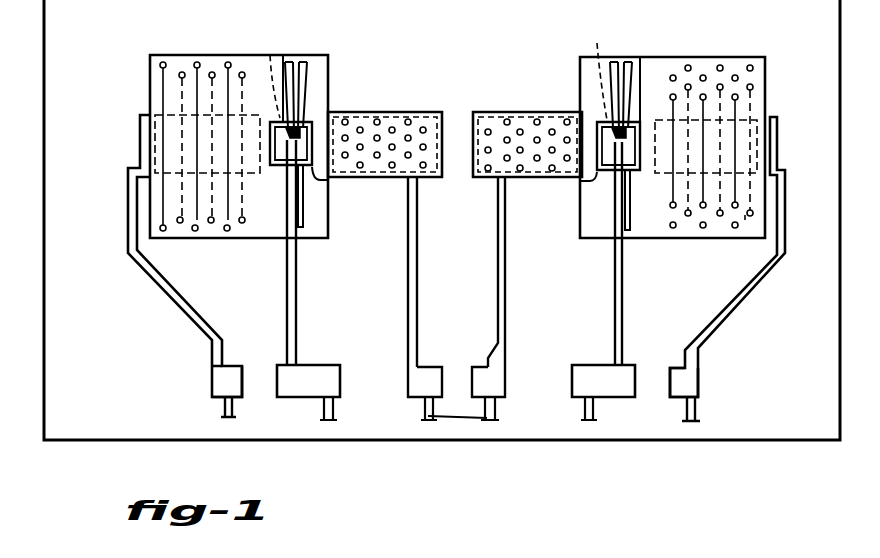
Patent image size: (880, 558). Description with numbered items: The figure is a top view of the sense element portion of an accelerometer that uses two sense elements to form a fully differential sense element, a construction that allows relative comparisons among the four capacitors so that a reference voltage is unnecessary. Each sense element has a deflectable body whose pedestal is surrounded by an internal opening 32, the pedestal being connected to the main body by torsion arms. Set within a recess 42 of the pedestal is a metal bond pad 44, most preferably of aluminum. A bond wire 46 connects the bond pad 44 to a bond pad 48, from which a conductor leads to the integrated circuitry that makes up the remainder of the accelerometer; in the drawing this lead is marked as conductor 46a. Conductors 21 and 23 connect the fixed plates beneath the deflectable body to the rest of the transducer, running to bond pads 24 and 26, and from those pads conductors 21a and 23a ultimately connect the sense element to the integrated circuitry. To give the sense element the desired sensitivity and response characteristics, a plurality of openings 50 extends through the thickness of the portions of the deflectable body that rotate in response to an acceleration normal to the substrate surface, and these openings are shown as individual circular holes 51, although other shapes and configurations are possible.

The conductor 21 is at (140, 147).
The conductor 21a is at (223, 412).
The conductor 23 is at (418, 222).
The conductor 23a is at (492, 416).
The bond pad 24 is at (220, 372).
The bond pad 26 is at (478, 367).
The internal opening 32 is at (283, 58).
The recess 42 is at (285, 133).
The bond pad 44 is at (272, 50).
The bond wire 46 is at (312, 140).
The lead terminal leg 46a is at (325, 414).
The bond pad 48 is at (318, 372).
The plurality of openings 50 is at (193, 238).
The circular holes 51 is at (748, 218).